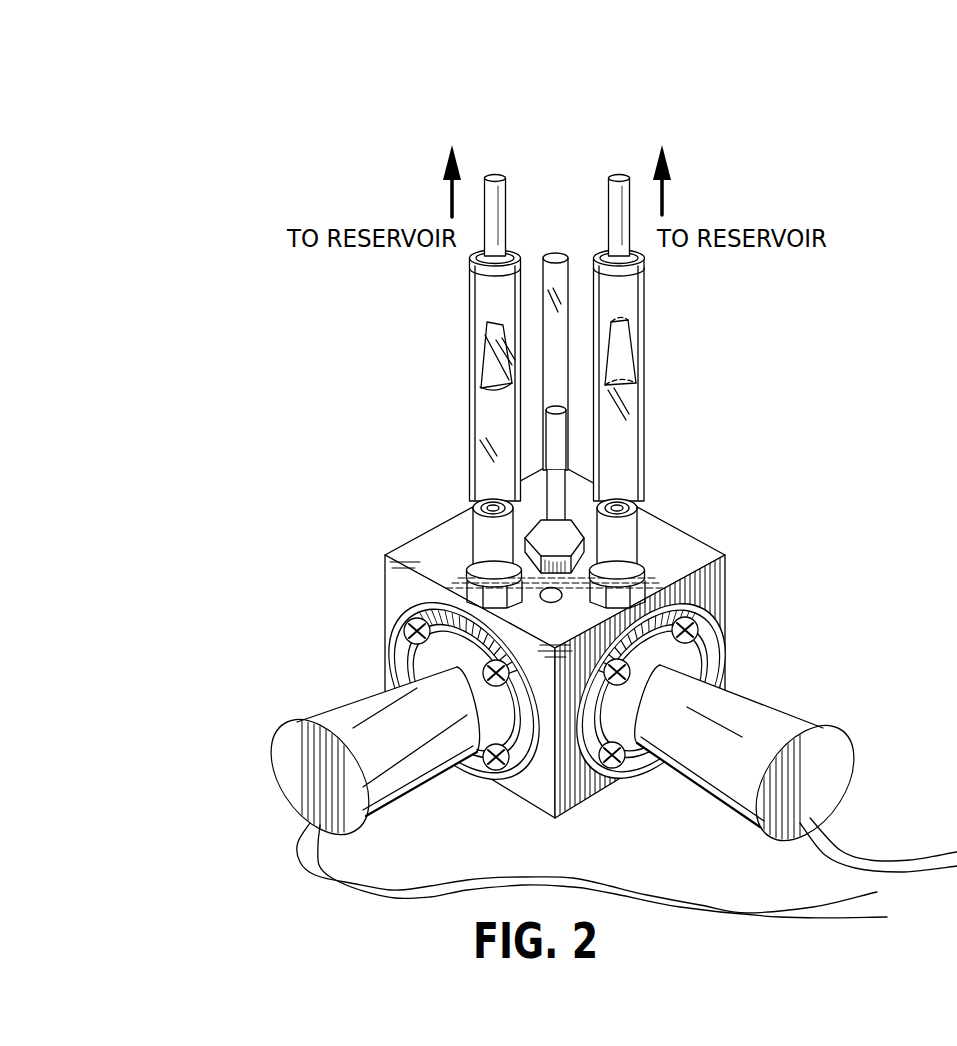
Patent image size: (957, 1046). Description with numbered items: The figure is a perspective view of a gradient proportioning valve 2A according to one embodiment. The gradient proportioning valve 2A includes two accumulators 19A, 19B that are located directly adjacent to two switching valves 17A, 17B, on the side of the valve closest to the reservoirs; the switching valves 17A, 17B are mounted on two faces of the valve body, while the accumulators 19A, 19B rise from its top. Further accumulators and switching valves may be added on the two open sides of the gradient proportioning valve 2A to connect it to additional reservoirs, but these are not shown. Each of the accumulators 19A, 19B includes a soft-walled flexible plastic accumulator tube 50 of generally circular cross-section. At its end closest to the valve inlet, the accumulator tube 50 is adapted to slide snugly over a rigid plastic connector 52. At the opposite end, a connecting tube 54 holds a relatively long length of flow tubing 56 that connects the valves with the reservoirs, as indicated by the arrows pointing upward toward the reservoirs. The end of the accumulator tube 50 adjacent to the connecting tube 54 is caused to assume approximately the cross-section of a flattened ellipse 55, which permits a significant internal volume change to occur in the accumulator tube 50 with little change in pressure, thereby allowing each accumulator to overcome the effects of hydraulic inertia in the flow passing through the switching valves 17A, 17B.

The gradient proportioning valve 2A is at (186, 128).
The switching valve 17A is at (330, 664).
The switching valve 17B is at (786, 668).
The accumulator 19A is at (432, 412).
The accumulator 19B is at (678, 412).
The accumulator tube 50 is at (468, 464).
The rigid plastic connector 52 is at (470, 544).
The connecting tube 54 is at (690, 284).
The flattened ellipse 55 is at (470, 330).
The flow tubing 56 is at (608, 203).